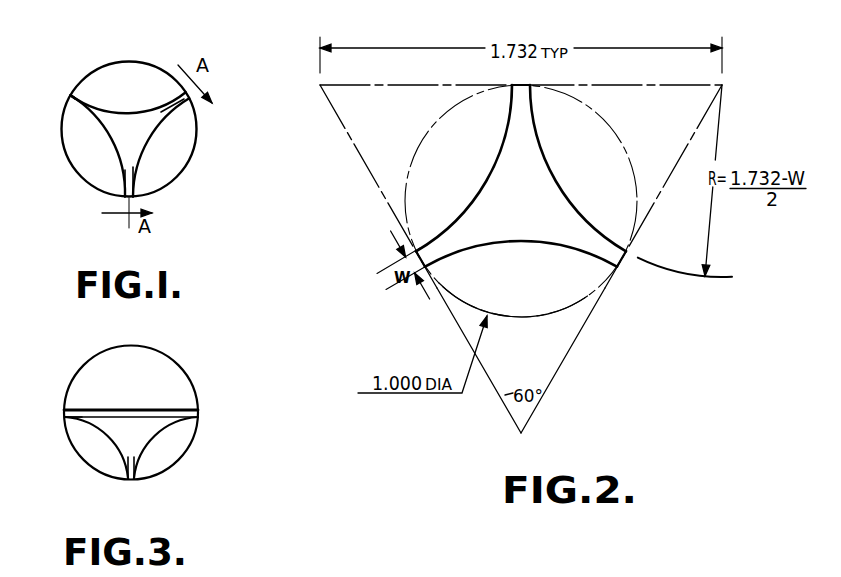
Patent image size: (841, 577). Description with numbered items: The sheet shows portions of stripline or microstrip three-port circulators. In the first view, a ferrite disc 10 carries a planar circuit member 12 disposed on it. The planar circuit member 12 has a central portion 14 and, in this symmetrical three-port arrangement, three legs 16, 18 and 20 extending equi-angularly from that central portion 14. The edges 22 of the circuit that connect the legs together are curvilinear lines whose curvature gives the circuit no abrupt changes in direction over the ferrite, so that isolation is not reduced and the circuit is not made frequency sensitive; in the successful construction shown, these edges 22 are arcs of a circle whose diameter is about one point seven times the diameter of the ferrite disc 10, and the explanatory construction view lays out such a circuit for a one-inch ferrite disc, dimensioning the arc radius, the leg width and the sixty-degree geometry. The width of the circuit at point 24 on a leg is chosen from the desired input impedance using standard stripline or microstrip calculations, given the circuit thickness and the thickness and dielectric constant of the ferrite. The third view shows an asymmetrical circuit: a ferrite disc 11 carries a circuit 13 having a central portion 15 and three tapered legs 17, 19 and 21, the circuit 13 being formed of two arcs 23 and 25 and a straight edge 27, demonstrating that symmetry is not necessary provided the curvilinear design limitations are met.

In FIG. 1, the ferrite disc 10 is at (183, 162).
In FIG. 1, the planar circuit member 12 is at (94, 194).
In FIG. 1, the central portion 14 is at (121, 130).
In FIG. 1, the leg 16 is at (92, 110).
In FIG. 1, the leg 18 is at (124, 171).
In FIG. 1, the leg 20 is at (170, 108).
In FIG. 1, the edges 22 is at (97, 127).
In FIG. 1, the point 24 is at (72, 95).
In FIG. 3, the ferrite disc 11 is at (173, 385).
In FIG. 3, the circuit 13 is at (208, 400).
In FIG. 3, the central portion 15 is at (177, 435).
In FIG. 3, the tapered leg 17 is at (167, 415).
In FIG. 3, the tapered leg 19 is at (127, 458).
In FIG. 3, the tapered leg 21 is at (82, 415).
In FIG. 3, the arc 23 is at (107, 432).
In FIG. 3, the arc 25 is at (136, 460).
In FIG. 3, the straight edge 27 is at (132, 408).